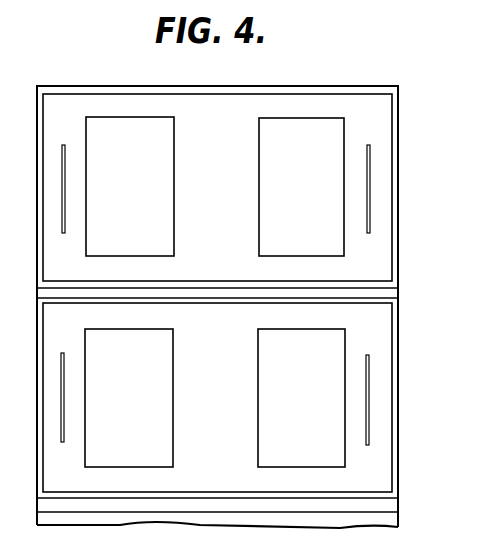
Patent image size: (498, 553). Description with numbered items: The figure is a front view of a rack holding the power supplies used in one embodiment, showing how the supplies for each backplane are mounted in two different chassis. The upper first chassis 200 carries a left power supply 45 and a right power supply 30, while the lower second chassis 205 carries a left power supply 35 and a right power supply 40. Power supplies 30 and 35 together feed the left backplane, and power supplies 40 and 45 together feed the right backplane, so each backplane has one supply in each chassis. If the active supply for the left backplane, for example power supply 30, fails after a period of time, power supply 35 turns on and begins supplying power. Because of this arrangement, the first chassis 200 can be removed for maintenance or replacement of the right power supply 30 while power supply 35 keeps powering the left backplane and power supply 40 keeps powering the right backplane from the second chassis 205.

The power supply 30 is at (259, 152).
The power supply 45 is at (174, 228).
The first chassis 200 is at (383, 245).
The power supply 35 is at (173, 372).
The power supply 40 is at (258, 434).
The second chassis 205 is at (376, 466).